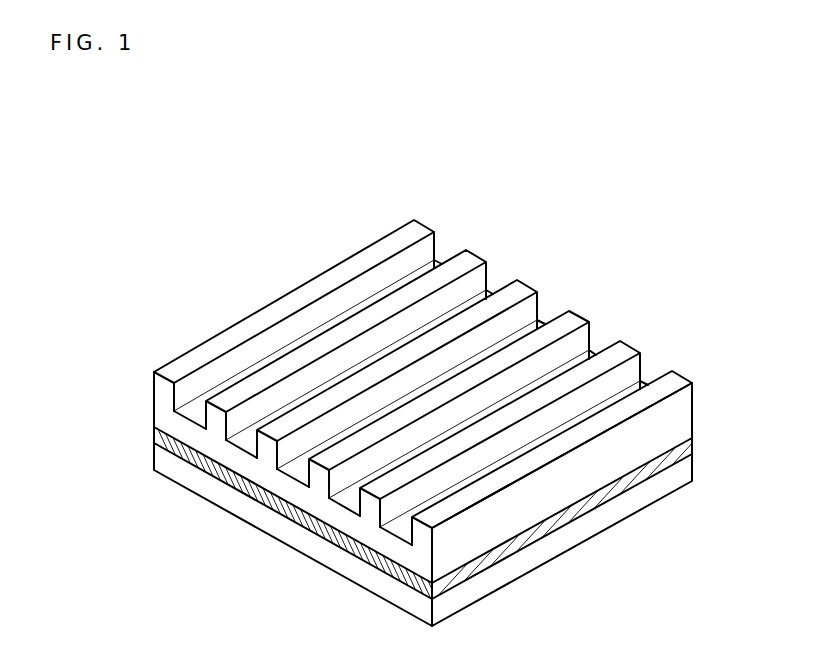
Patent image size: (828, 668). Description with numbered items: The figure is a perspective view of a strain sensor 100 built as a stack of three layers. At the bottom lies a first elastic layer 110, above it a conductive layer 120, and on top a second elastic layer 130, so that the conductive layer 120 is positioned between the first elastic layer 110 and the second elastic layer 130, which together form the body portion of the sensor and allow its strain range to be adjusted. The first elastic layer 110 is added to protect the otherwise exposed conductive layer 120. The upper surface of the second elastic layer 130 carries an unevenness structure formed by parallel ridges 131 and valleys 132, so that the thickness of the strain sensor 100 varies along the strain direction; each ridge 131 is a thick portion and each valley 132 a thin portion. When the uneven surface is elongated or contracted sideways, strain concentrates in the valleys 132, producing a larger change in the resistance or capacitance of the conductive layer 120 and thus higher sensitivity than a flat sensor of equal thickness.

The strain sensor 100 is at (306, 150).
The first elastic layer 110 is at (222, 492).
The conductive layer 120 is at (153, 434).
The second elastic layer 130 is at (153, 390).
The ridge 131 is at (311, 289).
The valley 132 is at (434, 262).